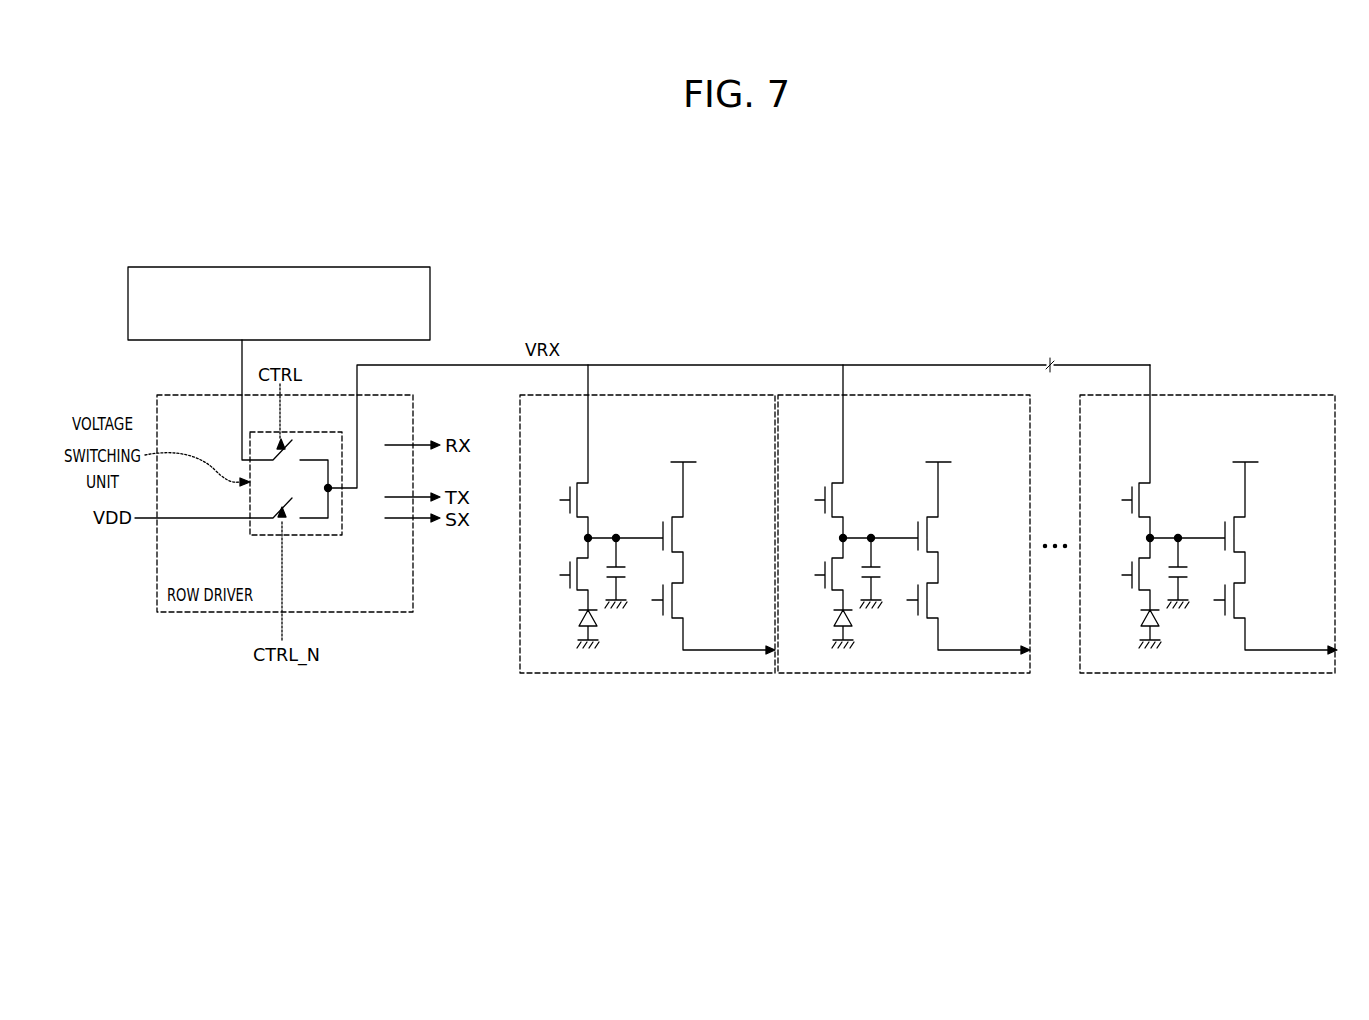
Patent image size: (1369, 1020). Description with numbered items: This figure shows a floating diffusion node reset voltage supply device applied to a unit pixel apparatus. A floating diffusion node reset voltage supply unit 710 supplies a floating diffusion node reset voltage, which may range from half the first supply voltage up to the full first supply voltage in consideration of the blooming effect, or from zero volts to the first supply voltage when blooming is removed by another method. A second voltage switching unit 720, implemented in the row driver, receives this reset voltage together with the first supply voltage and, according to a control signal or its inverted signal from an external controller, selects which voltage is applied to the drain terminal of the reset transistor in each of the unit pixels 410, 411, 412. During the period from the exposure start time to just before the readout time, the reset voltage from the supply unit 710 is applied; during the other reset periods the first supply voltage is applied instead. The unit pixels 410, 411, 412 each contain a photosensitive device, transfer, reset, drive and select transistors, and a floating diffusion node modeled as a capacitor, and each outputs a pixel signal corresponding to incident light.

The floating diffusion node reset voltage supply unit 710 is at (399, 267).
The second voltage switching unit 720 is at (300, 434).
The unit pixel 410 is at (738, 394).
The unit pixel 411 is at (904, 519).
The unit pixel 412 is at (1208, 519).